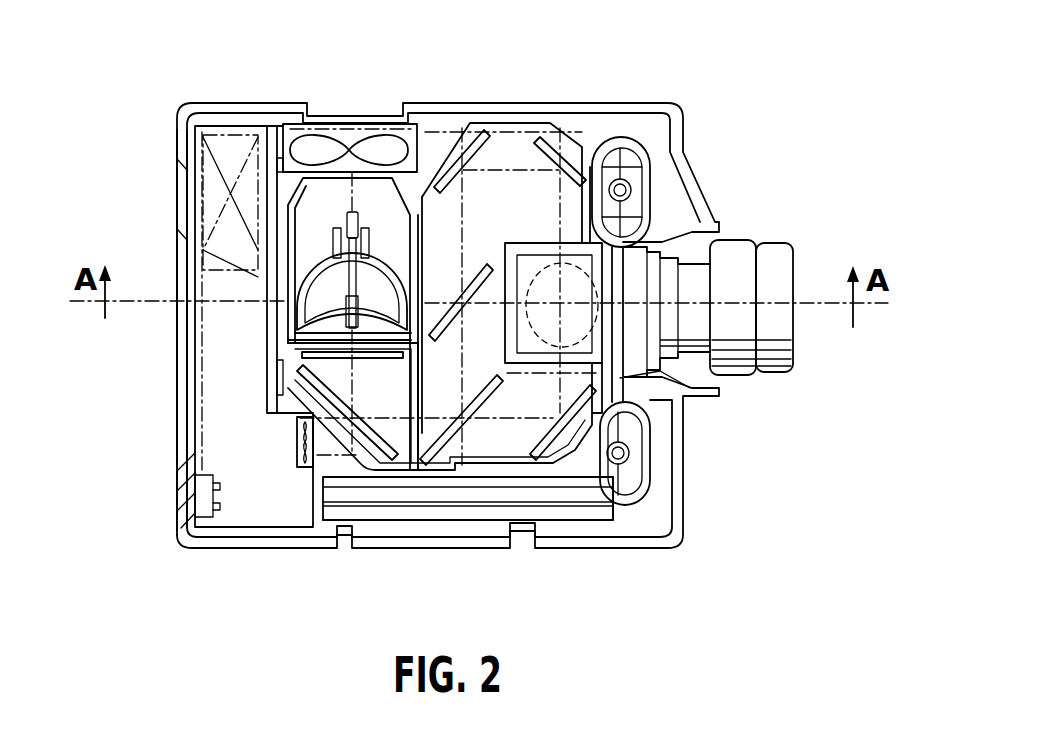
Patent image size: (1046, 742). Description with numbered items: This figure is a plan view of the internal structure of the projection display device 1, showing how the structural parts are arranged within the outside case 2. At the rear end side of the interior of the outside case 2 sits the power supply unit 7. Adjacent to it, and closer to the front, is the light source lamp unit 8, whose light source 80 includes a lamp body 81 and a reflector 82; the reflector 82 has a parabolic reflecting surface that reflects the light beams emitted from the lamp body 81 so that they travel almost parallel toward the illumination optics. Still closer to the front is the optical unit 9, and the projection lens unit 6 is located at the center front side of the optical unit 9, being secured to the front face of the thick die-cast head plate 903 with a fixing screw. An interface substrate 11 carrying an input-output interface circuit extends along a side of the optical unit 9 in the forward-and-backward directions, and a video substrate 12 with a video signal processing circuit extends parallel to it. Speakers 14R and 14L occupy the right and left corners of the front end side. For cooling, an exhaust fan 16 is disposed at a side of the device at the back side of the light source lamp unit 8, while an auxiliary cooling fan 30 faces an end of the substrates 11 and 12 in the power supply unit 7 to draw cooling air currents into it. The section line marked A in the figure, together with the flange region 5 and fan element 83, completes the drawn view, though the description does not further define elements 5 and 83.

The projection display device 1 is at (630, 60).
The outside case 2 is at (178, 258).
The lens holder flange 5 is at (690, 458).
The projection lens unit 6 is at (740, 240).
The power supply unit 7 is at (232, 443).
The light source lamp unit 8 is at (408, 250).
The optical unit 9 is at (513, 123).
The interface substrate 11 is at (570, 522).
The video substrate 12 is at (490, 485).
The speaker 14R is at (655, 150).
The speaker 14L is at (685, 483).
The exhaust fan 16 is at (288, 126).
The auxiliary cooling fan 30 is at (297, 470).
The light source 80 is at (316, 244).
The lamp body 81 is at (362, 275).
The reflector 82 is at (431, 259).
The cooling fan 83 is at (343, 195).
The head plate 903 is at (620, 378).